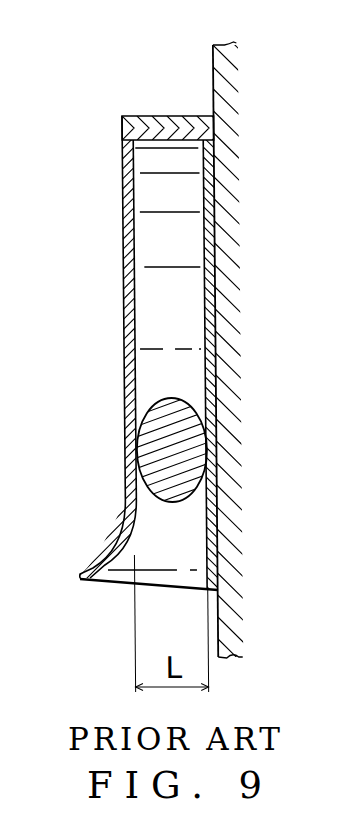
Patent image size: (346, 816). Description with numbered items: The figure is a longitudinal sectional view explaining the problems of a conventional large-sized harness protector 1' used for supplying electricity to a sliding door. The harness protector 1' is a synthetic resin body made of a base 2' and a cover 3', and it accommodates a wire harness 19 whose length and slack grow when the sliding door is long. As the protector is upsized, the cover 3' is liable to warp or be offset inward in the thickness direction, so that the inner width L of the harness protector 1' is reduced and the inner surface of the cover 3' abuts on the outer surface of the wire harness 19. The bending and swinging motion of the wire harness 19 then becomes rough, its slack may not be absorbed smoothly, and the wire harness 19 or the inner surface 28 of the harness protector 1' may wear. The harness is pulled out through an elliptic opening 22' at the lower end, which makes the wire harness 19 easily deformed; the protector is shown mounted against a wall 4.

The wall 4 is at (212, 70).
The harness protector 1' is at (229, 223).
The base 2' is at (250, 370).
The cover 3' is at (208, 318).
The inner surface 28 is at (197, 368).
The wire harness 19 is at (136, 437).
The elliptic opening 22' is at (126, 560).